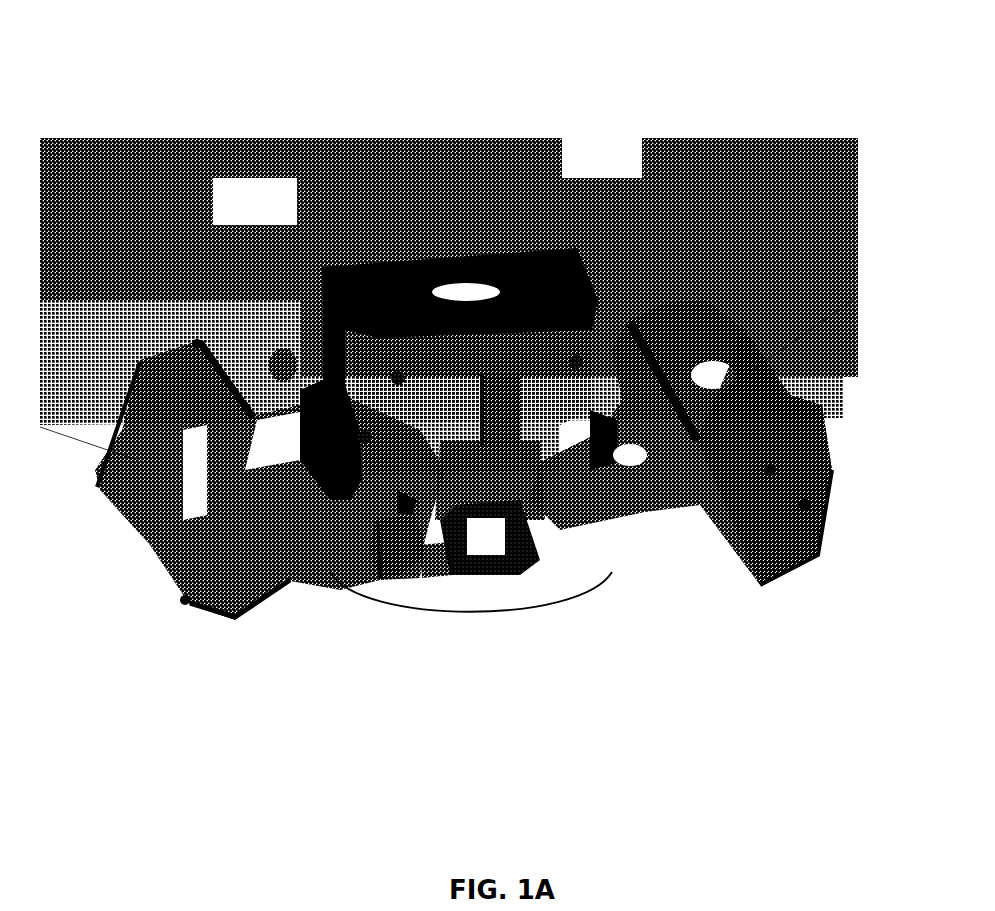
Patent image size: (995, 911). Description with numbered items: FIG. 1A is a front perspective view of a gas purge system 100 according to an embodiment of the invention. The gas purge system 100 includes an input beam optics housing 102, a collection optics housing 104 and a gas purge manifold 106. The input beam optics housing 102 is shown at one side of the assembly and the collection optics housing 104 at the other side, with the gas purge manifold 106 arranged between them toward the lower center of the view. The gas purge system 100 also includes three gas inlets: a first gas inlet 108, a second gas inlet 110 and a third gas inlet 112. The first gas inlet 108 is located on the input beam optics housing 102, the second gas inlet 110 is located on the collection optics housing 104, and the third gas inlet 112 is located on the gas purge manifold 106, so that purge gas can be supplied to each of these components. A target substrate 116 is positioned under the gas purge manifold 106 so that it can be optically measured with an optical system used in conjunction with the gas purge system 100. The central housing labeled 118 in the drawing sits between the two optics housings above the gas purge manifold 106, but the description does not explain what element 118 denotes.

The gas purge system 100 is at (258, 121).
The input beam optics housing 102 is at (295, 553).
The collection optics housing 104 is at (675, 507).
The gas purge manifold 106 is at (510, 563).
The first gas inlet 108 is at (283, 340).
The second gas inlet 110 is at (710, 450).
The third gas inlet 112 is at (400, 563).
The target substrate 116 is at (388, 607).
The central housing 118 is at (503, 357).